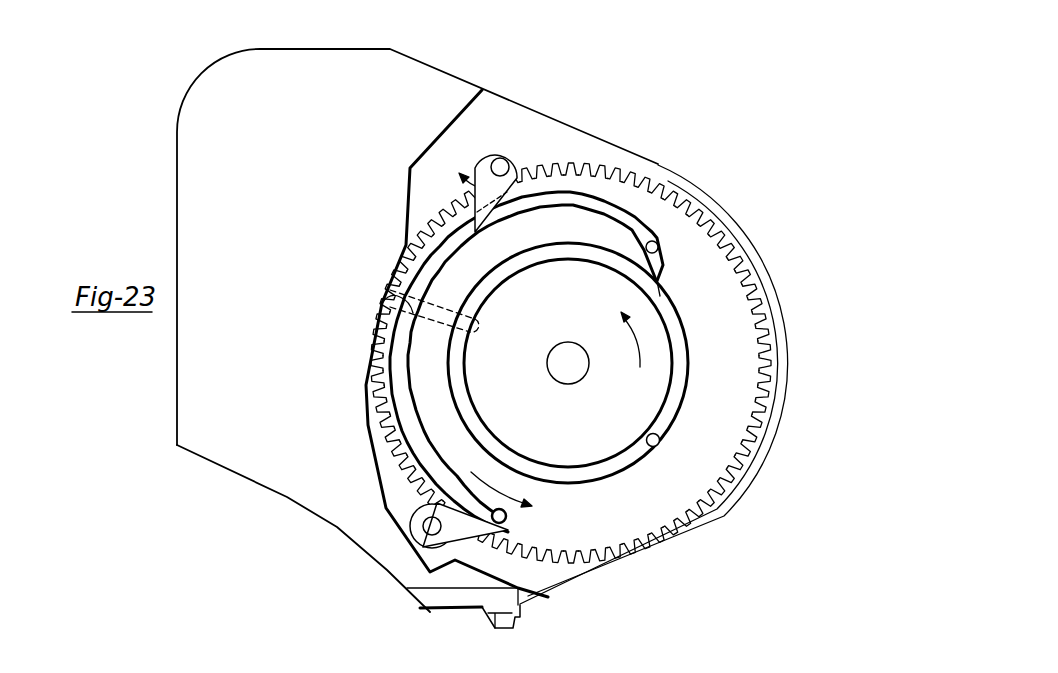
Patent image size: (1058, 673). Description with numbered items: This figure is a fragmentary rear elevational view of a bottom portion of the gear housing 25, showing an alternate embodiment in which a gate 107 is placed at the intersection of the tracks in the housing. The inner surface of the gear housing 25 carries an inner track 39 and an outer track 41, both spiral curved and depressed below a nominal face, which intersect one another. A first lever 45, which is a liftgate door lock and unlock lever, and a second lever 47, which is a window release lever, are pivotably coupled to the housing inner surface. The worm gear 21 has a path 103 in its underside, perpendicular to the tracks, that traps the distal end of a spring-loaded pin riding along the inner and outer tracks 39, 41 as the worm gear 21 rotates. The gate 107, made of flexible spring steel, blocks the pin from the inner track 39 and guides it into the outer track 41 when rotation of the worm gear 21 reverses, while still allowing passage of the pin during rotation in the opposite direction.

The worm gear 21 is at (760, 421).
The gear housing 25 is at (668, 165).
The inner track 39 is at (658, 437).
The outer track 41 is at (659, 248).
The first lever 45 is at (513, 153).
The second lever 47 is at (413, 545).
The path 103 is at (382, 307).
The gate 107 is at (660, 288).